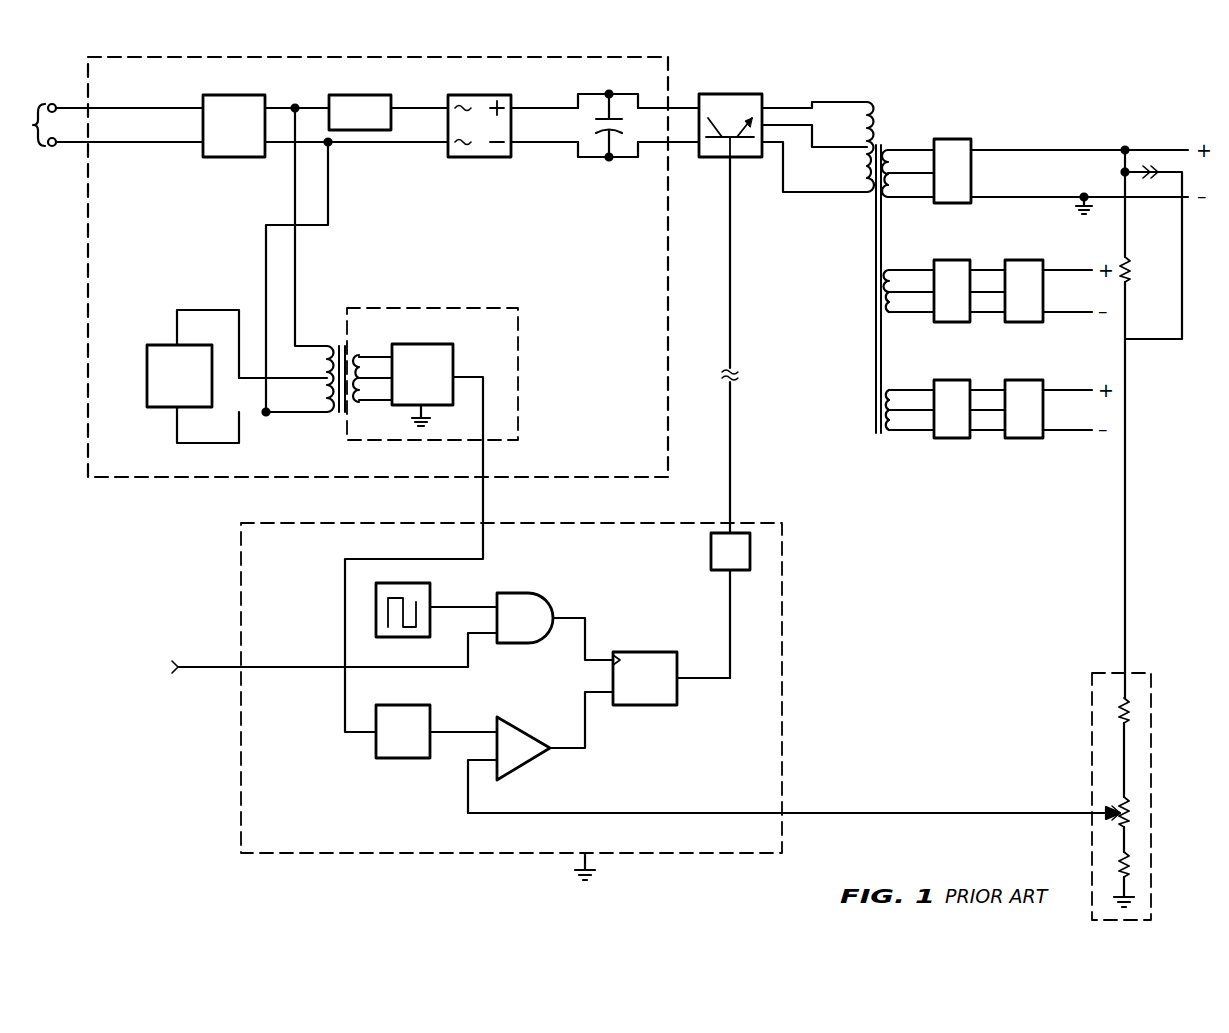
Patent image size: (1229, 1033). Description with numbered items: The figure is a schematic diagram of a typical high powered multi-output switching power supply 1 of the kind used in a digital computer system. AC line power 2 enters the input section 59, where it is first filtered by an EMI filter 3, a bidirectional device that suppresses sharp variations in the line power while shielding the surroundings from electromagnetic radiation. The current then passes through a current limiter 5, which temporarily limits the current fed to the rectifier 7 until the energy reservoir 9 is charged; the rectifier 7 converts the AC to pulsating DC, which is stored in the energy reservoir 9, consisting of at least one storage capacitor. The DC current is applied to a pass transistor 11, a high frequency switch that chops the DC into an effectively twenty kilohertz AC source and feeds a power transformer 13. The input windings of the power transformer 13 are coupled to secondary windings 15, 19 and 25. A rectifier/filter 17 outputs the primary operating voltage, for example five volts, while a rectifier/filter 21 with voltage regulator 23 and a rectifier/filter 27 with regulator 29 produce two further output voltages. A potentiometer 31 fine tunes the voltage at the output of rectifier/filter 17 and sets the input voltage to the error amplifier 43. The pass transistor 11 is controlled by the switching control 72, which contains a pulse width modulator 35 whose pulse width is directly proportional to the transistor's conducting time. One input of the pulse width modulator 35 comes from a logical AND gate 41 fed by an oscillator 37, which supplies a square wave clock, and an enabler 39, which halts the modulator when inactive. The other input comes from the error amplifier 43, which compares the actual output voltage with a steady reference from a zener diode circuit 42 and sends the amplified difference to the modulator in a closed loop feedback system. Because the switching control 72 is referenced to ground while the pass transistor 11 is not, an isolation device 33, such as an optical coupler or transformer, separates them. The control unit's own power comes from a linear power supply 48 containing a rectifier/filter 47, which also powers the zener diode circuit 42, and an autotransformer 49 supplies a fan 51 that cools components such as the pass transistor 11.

The power supply 1 is at (700, 72).
The line power 2 is at (35, 125).
The EMI filter 3 is at (243, 95).
The current limiter 5 is at (364, 95).
The rectifier 7 is at (475, 95).
The energy reservoir 9 is at (616, 95).
The pass transistor 11 is at (763, 93).
The power transformer 13 is at (855, 101).
The secondary winding 15 is at (913, 150).
The rectifier/filter 17 is at (956, 139).
The secondary winding 19 is at (907, 270).
The rectifier/filter 21 is at (953, 260).
The voltage regulator 23 is at (1025, 261).
The secondary winding 25 is at (909, 390).
The rectifier/filter 27 is at (965, 380).
The regulator 29 is at (1025, 380).
The potentiometer 31 is at (1148, 808).
The isolation device 33 is at (749, 537).
The pulse width modulator 35 is at (677, 701).
The oscillator 37 is at (432, 598).
The enabler 39 is at (319, 655).
The logical AND gate 41 is at (550, 606).
The zener diode circuit 42 is at (406, 759).
The error amplifier 43 is at (531, 757).
The rectifier/filter 47 is at (454, 363).
The linear power supply 48 is at (436, 316).
The autotransformer 49 is at (311, 346).
The fan 51 is at (147, 362).
The input section 59 is at (86, 244).
The switching control 72 is at (440, 842).